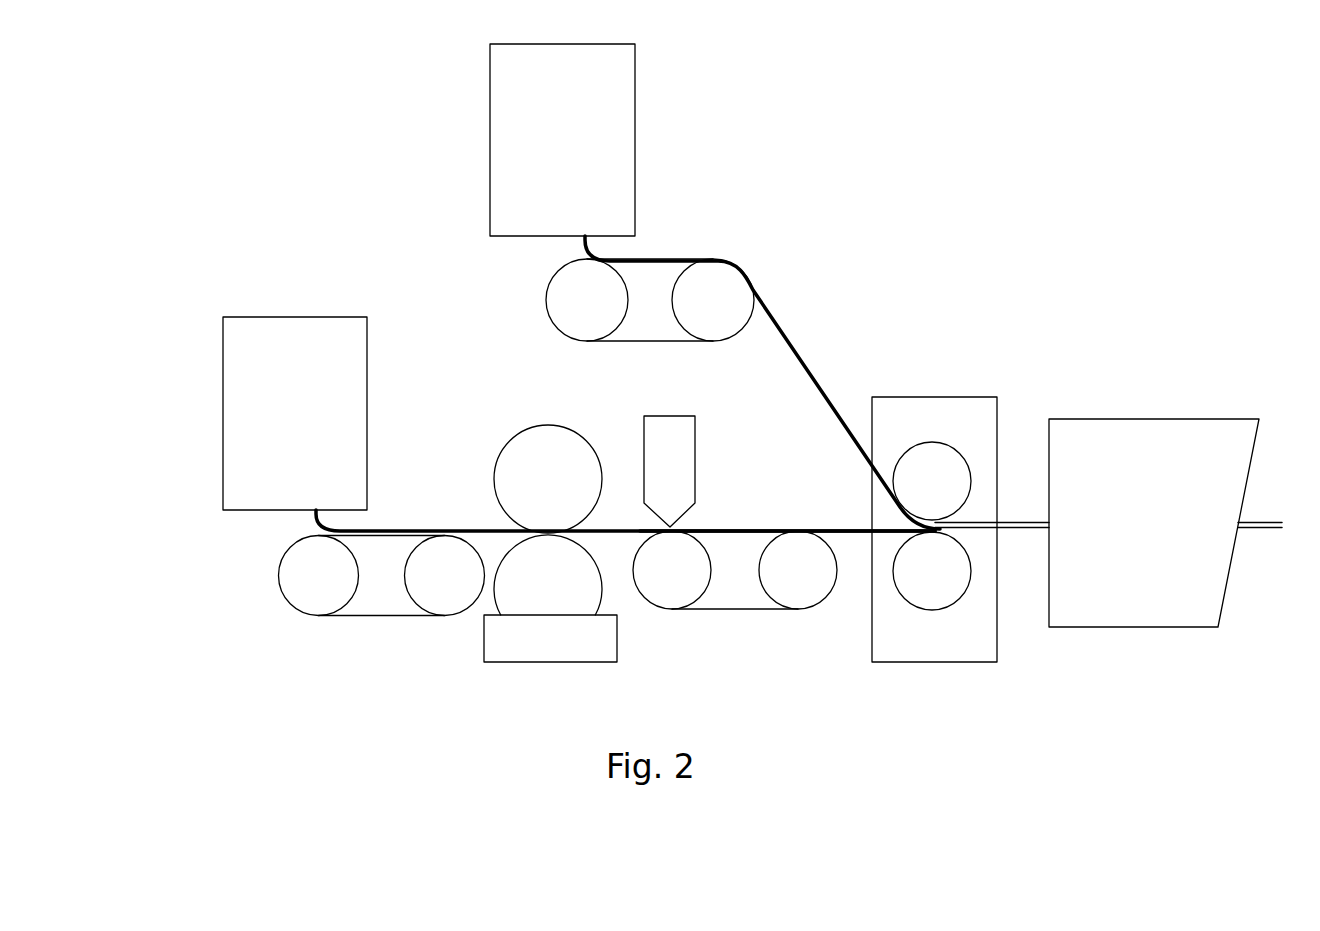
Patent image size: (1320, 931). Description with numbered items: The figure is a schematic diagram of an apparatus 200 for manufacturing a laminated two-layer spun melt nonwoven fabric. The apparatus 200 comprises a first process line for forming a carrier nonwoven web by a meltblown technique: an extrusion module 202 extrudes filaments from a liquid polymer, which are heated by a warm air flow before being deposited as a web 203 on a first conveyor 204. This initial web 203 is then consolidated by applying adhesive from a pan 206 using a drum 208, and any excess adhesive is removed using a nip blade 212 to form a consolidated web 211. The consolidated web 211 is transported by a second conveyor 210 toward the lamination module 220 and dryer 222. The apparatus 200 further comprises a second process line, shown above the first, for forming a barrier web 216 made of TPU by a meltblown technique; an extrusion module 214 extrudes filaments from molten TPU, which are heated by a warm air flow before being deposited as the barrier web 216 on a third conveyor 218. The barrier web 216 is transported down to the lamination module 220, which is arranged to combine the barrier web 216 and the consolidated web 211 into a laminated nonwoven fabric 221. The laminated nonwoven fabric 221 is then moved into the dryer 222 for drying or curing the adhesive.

The apparatus 200 is at (222, 170).
The extrusion module 202 is at (233, 400).
The web 203 is at (403, 530).
The first conveyor 204 is at (382, 615).
The pan 206 is at (523, 652).
The drum 208 is at (525, 565).
The second conveyor 210 is at (735, 608).
The consolidated web 211 is at (740, 528).
The nip blade 212 is at (672, 478).
The extrusion module 214 is at (495, 97).
The barrier web 216 is at (672, 257).
The third conveyor 218 is at (645, 342).
The lamination module 220 is at (995, 398).
The laminated nonwoven fabric 221 is at (1022, 522).
The dryer 222 is at (1147, 430).